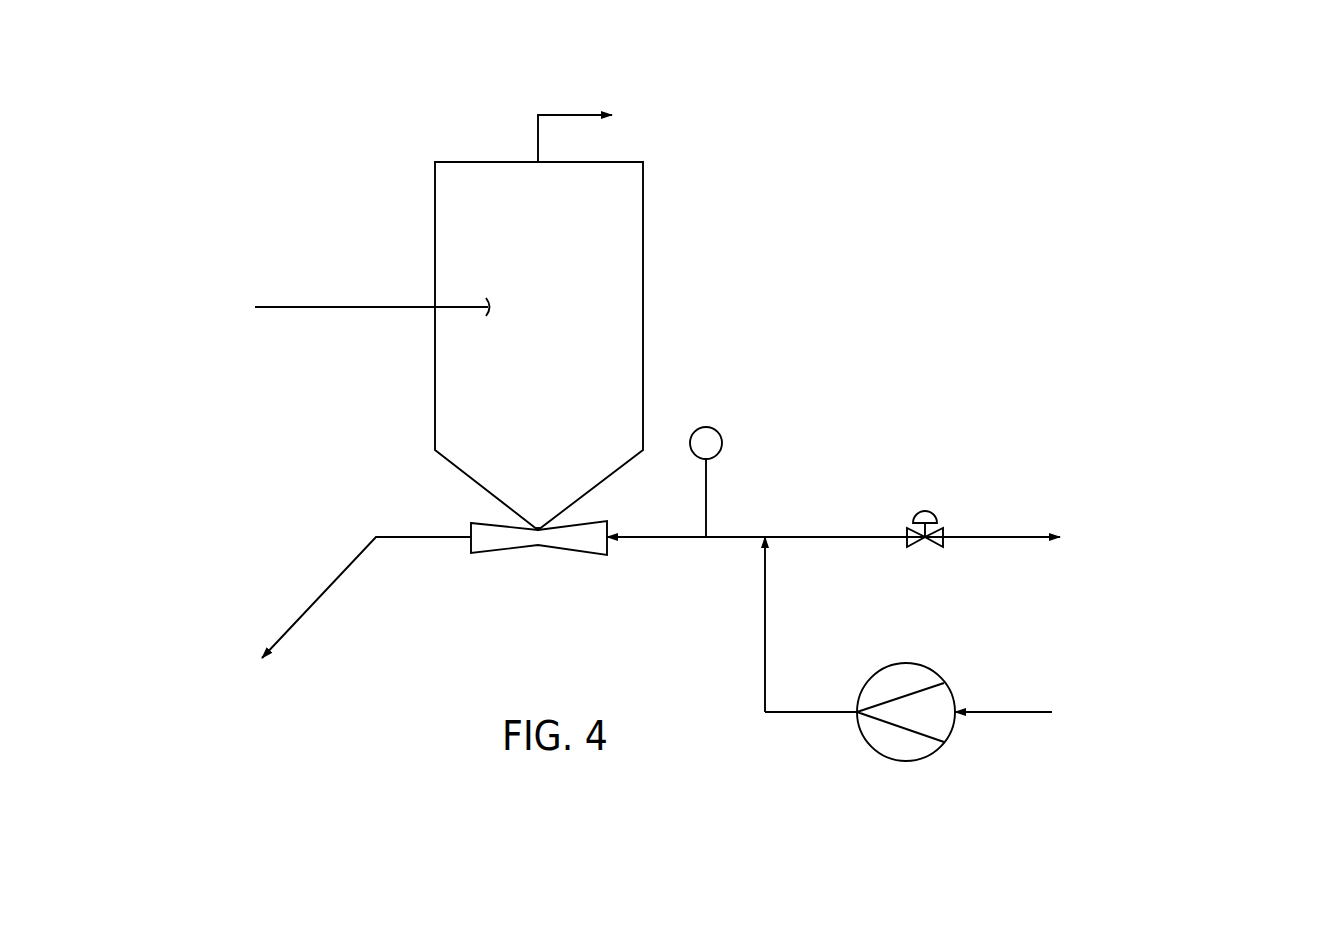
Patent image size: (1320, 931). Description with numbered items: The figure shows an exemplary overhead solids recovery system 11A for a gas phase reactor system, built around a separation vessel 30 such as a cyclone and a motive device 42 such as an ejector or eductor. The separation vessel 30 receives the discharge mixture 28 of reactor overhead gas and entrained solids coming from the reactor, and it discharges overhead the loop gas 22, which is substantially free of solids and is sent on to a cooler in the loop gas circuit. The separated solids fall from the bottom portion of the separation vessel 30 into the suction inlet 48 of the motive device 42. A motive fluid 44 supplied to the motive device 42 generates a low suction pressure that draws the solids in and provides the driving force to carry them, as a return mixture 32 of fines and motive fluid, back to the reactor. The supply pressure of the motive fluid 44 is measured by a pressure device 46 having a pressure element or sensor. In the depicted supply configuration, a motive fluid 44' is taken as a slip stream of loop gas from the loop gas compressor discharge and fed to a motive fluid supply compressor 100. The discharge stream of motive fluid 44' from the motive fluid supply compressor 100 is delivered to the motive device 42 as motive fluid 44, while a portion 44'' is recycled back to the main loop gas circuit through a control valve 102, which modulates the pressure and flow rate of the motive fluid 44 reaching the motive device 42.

The solids recovery system 11A is at (237, 180).
The separation vessel 30 is at (644, 270).
The loop gas 22 is at (570, 114).
The discharge mixture 28 is at (371, 306).
The motive device 42 is at (572, 552).
The suction inlet 48 is at (535, 528).
The return mixture 32 is at (325, 597).
The motive fluid 44 is at (905, 569).
The motive fluid slip stream 44' is at (1006, 658).
The recycled motive fluid portion 44'' is at (836, 505).
The pressure device 46 is at (721, 442).
The control valve 102 is at (928, 550).
The motive fluid supply compressor 100 is at (905, 762).